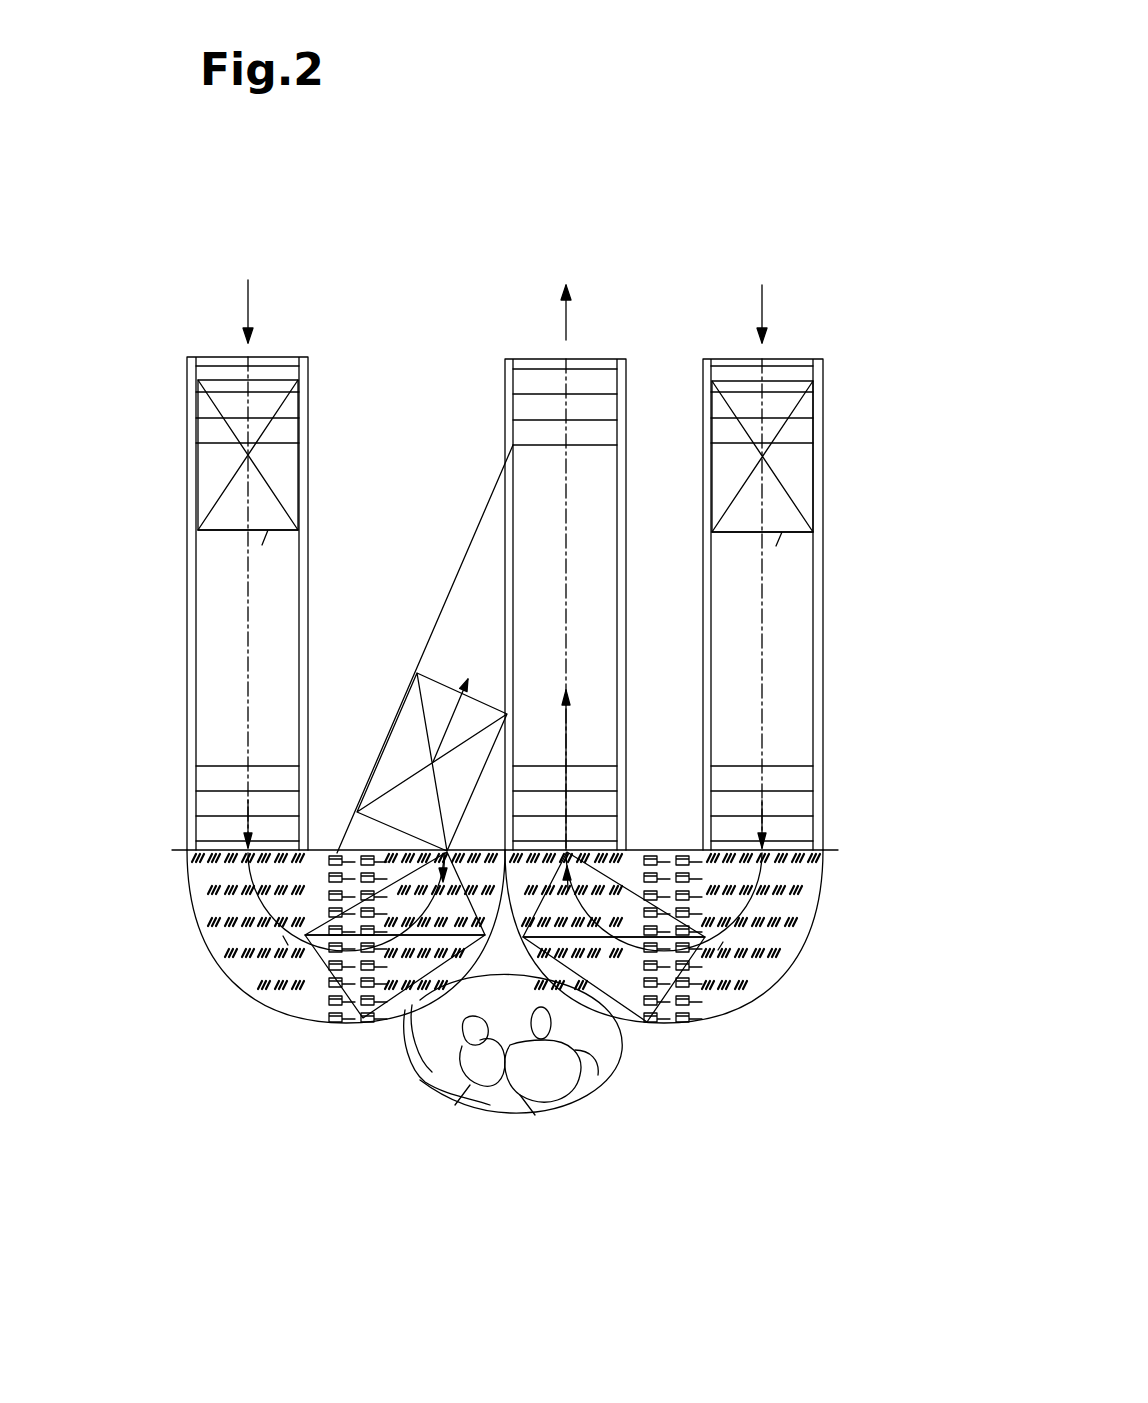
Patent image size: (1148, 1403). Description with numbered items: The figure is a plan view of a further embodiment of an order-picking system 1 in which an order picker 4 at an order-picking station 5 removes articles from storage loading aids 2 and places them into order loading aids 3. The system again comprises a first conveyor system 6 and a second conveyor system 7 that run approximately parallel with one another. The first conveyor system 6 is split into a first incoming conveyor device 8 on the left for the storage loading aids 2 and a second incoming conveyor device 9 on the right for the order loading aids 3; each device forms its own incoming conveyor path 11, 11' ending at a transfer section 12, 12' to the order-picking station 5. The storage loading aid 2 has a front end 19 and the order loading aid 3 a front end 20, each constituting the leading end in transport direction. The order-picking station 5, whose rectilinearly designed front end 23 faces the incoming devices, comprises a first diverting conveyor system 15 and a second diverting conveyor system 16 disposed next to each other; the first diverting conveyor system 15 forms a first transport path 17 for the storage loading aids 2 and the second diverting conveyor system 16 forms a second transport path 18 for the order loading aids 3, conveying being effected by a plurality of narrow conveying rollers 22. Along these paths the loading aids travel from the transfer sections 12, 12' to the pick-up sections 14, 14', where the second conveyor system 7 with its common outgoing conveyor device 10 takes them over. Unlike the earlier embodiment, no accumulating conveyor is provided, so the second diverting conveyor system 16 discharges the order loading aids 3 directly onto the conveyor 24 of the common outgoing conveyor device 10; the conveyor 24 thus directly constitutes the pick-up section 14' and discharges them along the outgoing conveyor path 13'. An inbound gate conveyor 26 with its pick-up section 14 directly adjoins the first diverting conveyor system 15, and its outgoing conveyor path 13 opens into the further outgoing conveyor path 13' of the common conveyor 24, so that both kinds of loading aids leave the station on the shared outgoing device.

The order-picking system 1 is at (757, 152).
The storage loading aid 2 is at (268, 455).
The order loading aid 3 is at (778, 465).
The order picker 4 is at (550, 1100).
The order-picking station 5 is at (787, 1097).
The first conveyor system 6 is at (712, 327).
The second conveyor system 7 is at (550, 337).
The first incoming conveyor device 8 is at (335, 357).
The second incoming conveyor device 9 is at (828, 358).
The common outgoing conveyor device 10 is at (497, 400).
The incoming conveyor path 11 is at (186, 742).
The incoming conveyor path 11' is at (821, 742).
The transfer section 12 is at (284, 779).
The transfer section 12' is at (797, 783).
The outgoing conveyor path 13 is at (429, 742).
The outgoing conveyor path 13' is at (597, 749).
The pick-up section 14 is at (395, 883).
The pick-up section 14' is at (614, 874).
The first diverting conveyor system 15 is at (238, 1010).
The second diverting conveyor system 16 is at (812, 968).
The first transport path 17 is at (283, 936).
The second transport path 18 is at (723, 942).
The front end 19 is at (268, 530).
The front end 20 is at (782, 535).
The conveying rollers 22 is at (748, 993).
The front end 23 is at (660, 843).
The conveyor 24 is at (585, 500).
The inbound gate conveyor 26 is at (440, 567).